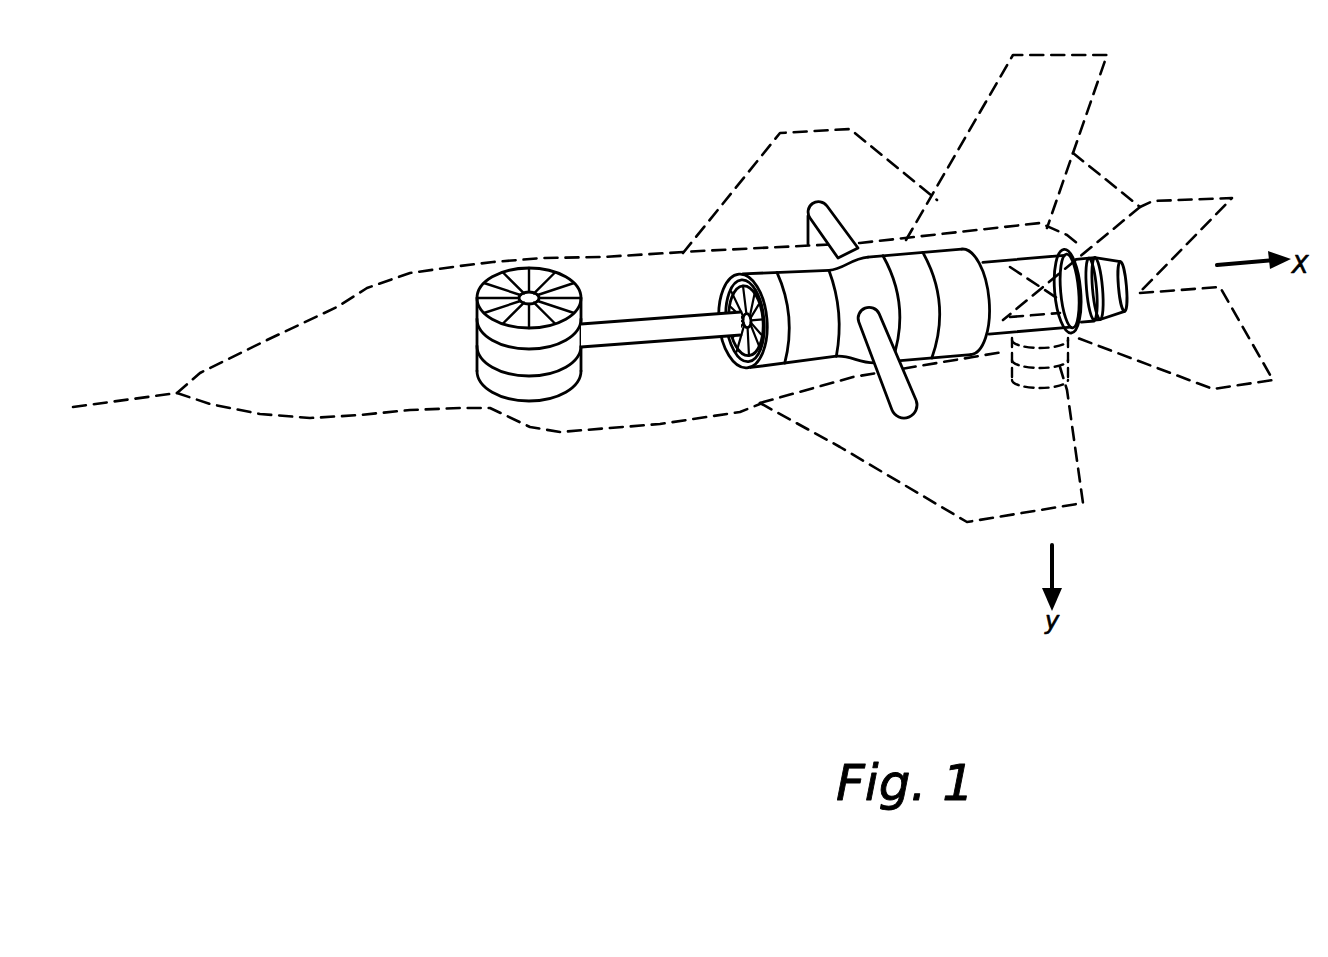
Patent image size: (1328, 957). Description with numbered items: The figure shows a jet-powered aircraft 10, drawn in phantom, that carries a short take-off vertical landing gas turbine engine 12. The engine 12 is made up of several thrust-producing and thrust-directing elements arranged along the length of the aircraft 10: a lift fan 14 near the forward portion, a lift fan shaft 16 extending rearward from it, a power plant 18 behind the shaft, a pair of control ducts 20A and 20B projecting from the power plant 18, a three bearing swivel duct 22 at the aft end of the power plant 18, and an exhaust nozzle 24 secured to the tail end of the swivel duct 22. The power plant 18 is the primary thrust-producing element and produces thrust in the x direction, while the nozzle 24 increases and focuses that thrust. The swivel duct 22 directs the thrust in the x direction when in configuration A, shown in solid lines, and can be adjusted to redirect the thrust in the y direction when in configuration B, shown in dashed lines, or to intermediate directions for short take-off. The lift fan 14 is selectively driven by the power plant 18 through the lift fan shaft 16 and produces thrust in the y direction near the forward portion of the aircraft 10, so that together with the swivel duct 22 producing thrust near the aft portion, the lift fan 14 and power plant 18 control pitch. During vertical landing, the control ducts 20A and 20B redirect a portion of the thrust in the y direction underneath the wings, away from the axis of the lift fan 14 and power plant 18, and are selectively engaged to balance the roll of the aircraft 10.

The jet-powered aircraft 10 is at (390, 307).
The gas turbine engine 12 is at (693, 288).
The lift fan 14 is at (487, 348).
The lift fan shaft 16 is at (673, 328).
The power plant 18 is at (803, 297).
The control duct 20A is at (876, 372).
The control duct 20B is at (832, 219).
The three bearing swivel duct 22 is at (1000, 283).
The exhaust nozzle 24 is at (1123, 270).
The configuration A is at (1124, 300).
The configuration B is at (1063, 358).